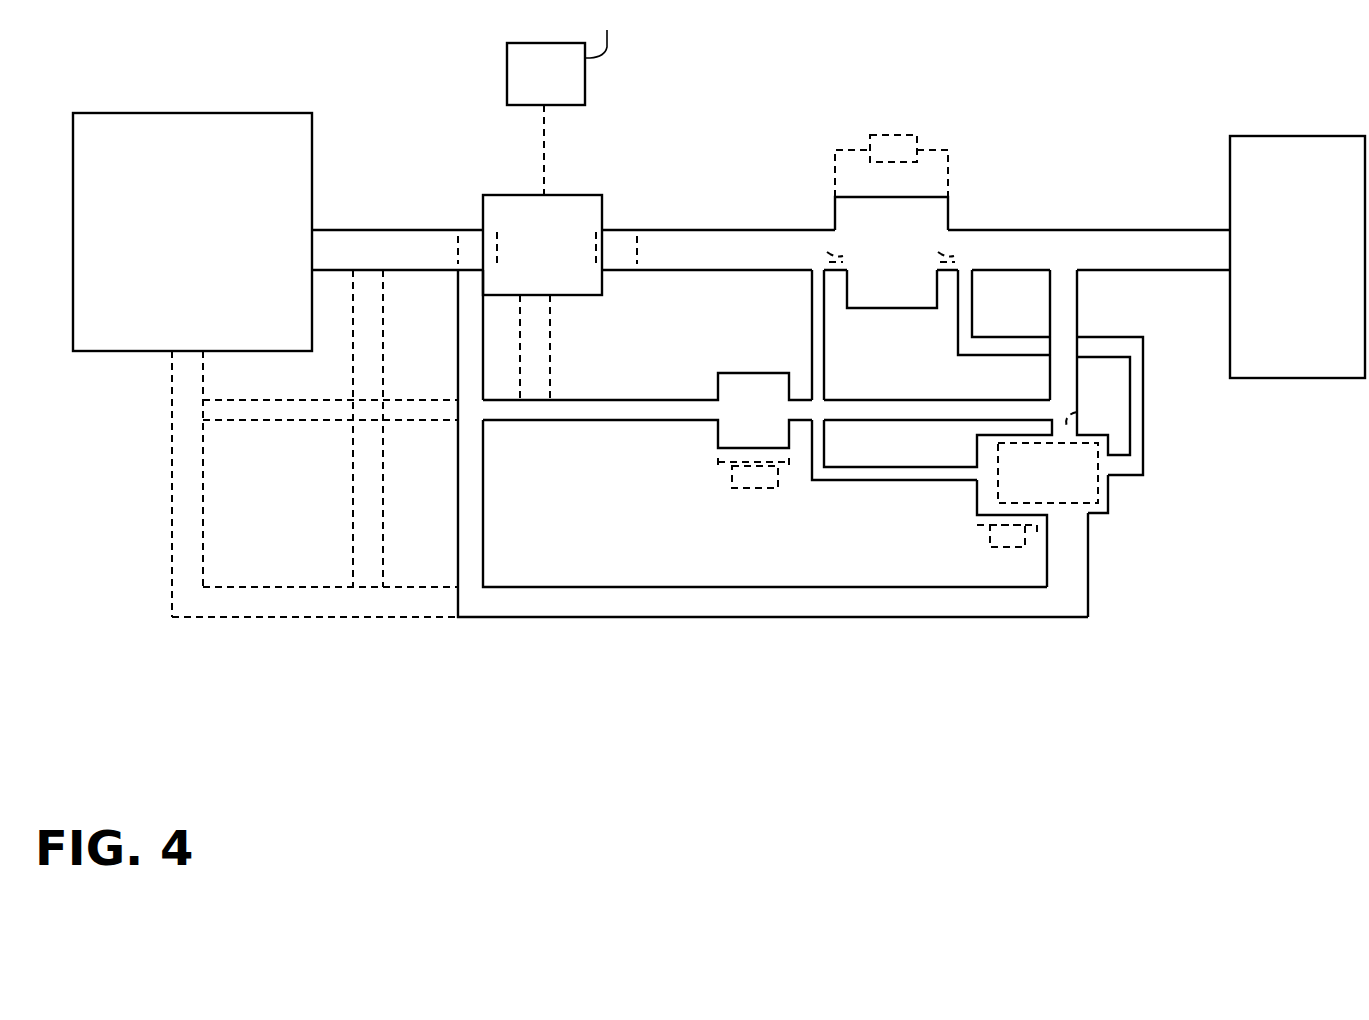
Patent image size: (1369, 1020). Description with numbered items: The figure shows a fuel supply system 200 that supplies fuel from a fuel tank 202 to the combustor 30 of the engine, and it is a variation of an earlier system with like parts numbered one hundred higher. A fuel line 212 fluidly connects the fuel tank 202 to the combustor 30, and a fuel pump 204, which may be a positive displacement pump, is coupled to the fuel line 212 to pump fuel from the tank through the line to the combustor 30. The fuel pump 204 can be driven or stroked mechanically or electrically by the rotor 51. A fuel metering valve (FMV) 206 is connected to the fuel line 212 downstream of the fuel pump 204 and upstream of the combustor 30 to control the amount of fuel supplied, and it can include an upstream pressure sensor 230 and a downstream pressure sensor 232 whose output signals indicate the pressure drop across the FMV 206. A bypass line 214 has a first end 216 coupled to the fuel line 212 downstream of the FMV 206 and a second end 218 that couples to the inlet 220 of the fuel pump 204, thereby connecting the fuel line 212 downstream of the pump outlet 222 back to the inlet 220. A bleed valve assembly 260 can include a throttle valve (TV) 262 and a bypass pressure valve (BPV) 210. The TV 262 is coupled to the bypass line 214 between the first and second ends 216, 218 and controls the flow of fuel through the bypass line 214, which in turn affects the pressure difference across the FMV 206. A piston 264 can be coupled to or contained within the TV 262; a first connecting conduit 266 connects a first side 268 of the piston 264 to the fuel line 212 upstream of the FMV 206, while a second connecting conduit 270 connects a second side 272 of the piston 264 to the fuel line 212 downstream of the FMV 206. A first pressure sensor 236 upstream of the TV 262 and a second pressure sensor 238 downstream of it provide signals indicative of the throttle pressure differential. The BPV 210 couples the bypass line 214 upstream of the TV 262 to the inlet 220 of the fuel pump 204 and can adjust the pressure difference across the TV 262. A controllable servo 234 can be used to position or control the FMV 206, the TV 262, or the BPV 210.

The fuel supply system 200 is at (390, 103).
The rotor 51 is at (532, 86).
The fuel tank 202 is at (166, 233).
The combustor 30 is at (1285, 265).
The fuel line 212 is at (733, 213).
The fuel pump 204 is at (582, 195).
The inlet 220 is at (457, 250).
The outlet 222 is at (637, 247).
The second end 218 is at (457, 272).
The fuel metering valve 206 is at (950, 197).
The downstream pressure sensor 232 is at (827, 255).
The upstream pressure sensor 230 is at (945, 258).
The controllable servo 234 is at (898, 128).
The first connecting conduit 266 is at (812, 293).
The bypass pressure valve 210 is at (716, 432).
The second connecting conduit 270 is at (972, 309).
The first end 216 is at (1080, 270).
The bypass line 214 is at (1082, 307).
The first pressure sensor 236 is at (1077, 412).
The second side 272 is at (1098, 443).
The throttle valve 262 is at (1107, 520).
The piston 264 is at (1108, 478).
The first side 268 is at (997, 490).
The second pressure sensor 238 is at (1075, 505).
The bleed valve assembly 260 is at (978, 641).